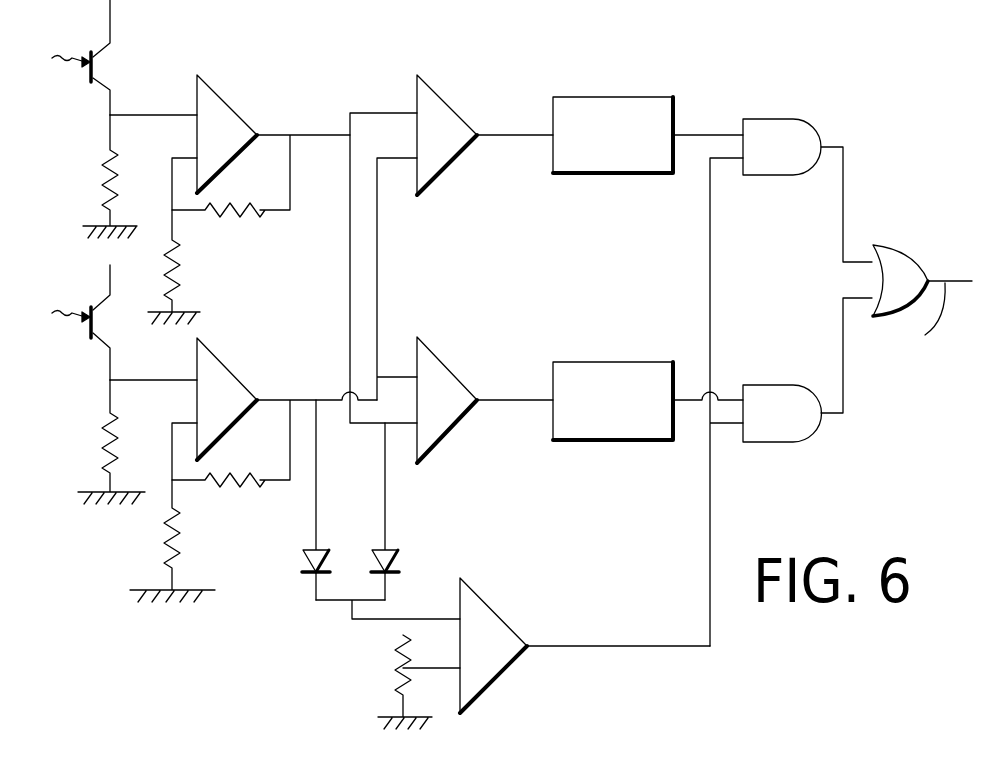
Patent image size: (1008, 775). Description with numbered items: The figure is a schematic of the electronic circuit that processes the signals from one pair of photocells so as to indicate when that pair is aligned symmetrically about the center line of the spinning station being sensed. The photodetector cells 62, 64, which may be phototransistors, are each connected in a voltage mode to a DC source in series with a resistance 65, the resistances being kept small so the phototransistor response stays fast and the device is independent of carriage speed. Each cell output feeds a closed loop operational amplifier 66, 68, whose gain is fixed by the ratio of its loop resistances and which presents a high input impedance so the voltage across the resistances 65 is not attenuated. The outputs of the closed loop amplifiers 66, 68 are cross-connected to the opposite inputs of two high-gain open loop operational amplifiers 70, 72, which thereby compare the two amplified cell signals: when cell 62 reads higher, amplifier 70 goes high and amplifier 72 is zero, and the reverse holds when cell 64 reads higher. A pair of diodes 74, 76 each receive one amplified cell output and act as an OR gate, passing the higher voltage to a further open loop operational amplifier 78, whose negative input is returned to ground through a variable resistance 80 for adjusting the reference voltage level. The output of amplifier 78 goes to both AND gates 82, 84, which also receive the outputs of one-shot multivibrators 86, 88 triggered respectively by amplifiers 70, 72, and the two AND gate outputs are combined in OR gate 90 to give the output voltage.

The photodetector cell 62 is at (104, 61).
The photodetector cell 64 is at (103, 320).
The resistance 65 is at (103, 180).
The closed loop operational amplifier 66 is at (233, 104).
The closed loop operational amplifier 68 is at (235, 377).
The open loop operational amplifier 70 is at (452, 108).
The open loop operational amplifier 72 is at (460, 378).
The diode 74 is at (305, 553).
The diode 76 is at (397, 555).
The open loop operational amplifier 78 is at (500, 615).
The variable resistance 80 is at (398, 660).
The AND gate 82 is at (792, 119).
The AND gate 84 is at (795, 442).
The one-shot multivibrator 86 is at (667, 97).
The one-shot multivibrator 88 is at (627, 362).
The OR gate 90 is at (948, 217).